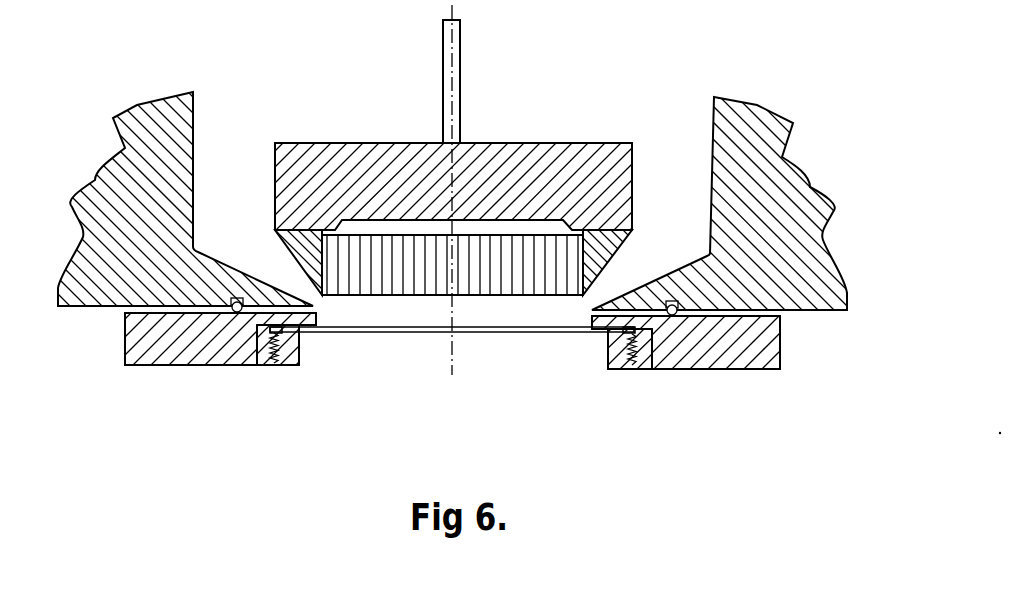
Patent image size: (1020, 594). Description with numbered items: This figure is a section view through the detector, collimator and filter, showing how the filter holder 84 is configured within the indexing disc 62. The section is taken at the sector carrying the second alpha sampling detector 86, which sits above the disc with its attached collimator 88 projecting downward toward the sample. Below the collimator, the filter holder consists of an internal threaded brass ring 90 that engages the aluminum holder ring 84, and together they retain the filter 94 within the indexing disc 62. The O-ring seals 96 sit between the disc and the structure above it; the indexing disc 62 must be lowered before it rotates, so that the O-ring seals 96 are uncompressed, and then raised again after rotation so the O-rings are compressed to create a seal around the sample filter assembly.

The indexing disc 62 is at (182, 357).
The filter holder 84 is at (297, 358).
The second alpha sampling detector 86 is at (575, 160).
The collimator 88 is at (417, 242).
The internal threaded brass ring 90 is at (265, 362).
The filter 94 is at (525, 330).
The O-ring seals 96 is at (237, 303).